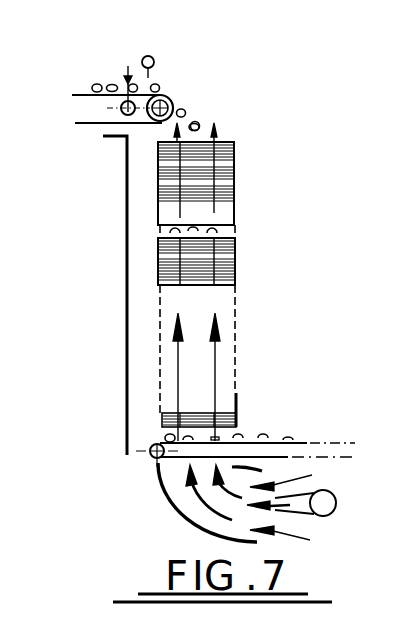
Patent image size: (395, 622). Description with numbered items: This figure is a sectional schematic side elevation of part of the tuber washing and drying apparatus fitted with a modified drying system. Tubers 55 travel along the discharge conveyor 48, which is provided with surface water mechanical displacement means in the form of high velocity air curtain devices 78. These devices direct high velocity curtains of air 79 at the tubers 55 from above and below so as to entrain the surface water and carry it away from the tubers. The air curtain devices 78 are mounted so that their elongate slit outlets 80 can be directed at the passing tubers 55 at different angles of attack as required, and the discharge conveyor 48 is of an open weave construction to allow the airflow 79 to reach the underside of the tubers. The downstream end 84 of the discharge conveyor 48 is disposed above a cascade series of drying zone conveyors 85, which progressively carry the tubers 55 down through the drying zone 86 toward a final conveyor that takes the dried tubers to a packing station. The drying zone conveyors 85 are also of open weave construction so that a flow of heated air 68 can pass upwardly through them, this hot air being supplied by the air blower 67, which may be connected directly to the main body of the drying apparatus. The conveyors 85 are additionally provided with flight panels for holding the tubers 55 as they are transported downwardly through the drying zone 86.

The discharge conveyor 48 is at (171, 98).
The tubers 55 is at (160, 84).
The air blower 67 is at (320, 500).
The heated air 68 is at (207, 505).
The high velocity air curtain devices 78 is at (120, 100).
The high velocity curtains of air 79 is at (125, 83).
The elongate slit outlets 80 is at (144, 78).
The downstream end 84 is at (173, 100).
The drying zone conveyors 85 is at (237, 200).
The drying zone 86 is at (218, 273).